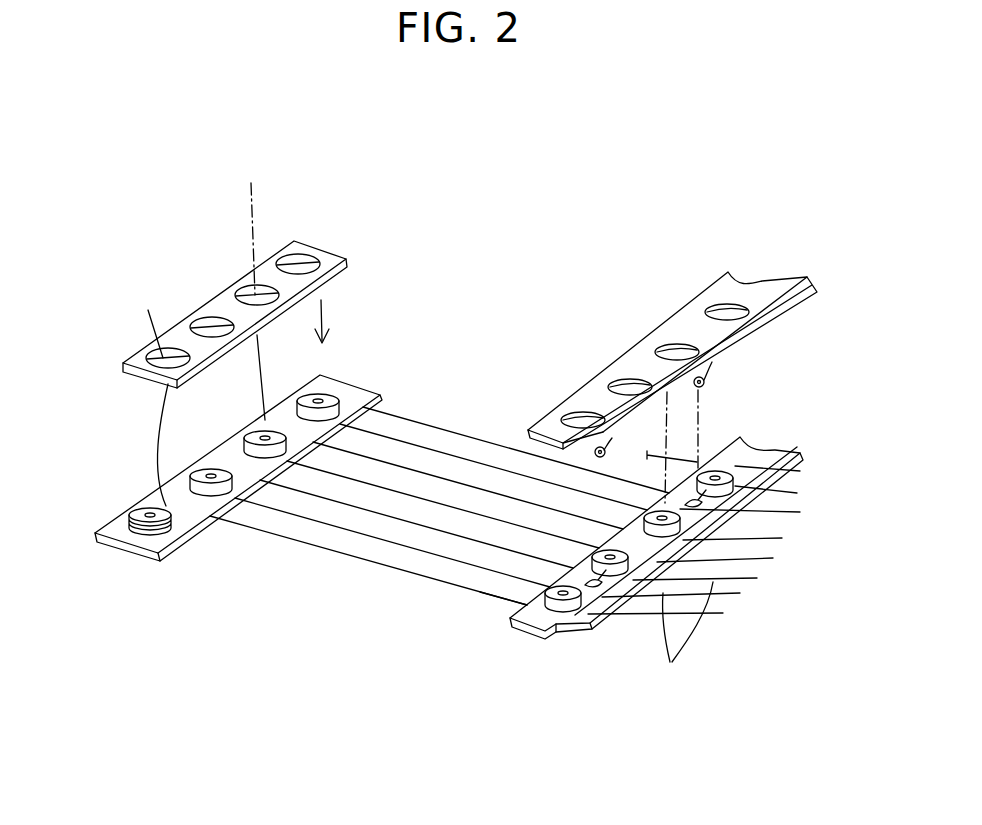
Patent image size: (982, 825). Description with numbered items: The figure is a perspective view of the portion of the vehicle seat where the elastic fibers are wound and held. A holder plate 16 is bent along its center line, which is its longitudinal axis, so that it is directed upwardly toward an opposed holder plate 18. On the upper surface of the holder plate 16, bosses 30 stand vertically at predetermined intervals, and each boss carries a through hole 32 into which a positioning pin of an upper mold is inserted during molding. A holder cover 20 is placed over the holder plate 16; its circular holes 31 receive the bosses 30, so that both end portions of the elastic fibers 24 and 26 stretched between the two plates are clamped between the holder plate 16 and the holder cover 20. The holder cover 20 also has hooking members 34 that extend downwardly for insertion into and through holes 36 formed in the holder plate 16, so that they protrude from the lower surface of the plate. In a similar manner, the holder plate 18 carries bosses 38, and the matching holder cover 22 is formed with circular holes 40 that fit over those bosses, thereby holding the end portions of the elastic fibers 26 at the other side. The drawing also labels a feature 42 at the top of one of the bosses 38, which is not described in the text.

The holder plate 16 is at (522, 622).
The holder plate 18 is at (97, 535).
The holder cover 20 is at (677, 308).
The holder cover 22 is at (133, 372).
The elastic fibers 24 is at (694, 575).
The elastic fibers 26 is at (353, 532).
The bosses 30 is at (572, 606).
The circular holes 31 is at (625, 382).
The through hole 32 is at (540, 575).
The hooking members 34 is at (633, 385).
The holes 36 is at (595, 590).
The bosses 38 is at (340, 395).
The circular holes 40 is at (302, 264).
The sleeve bore 42 is at (319, 400).